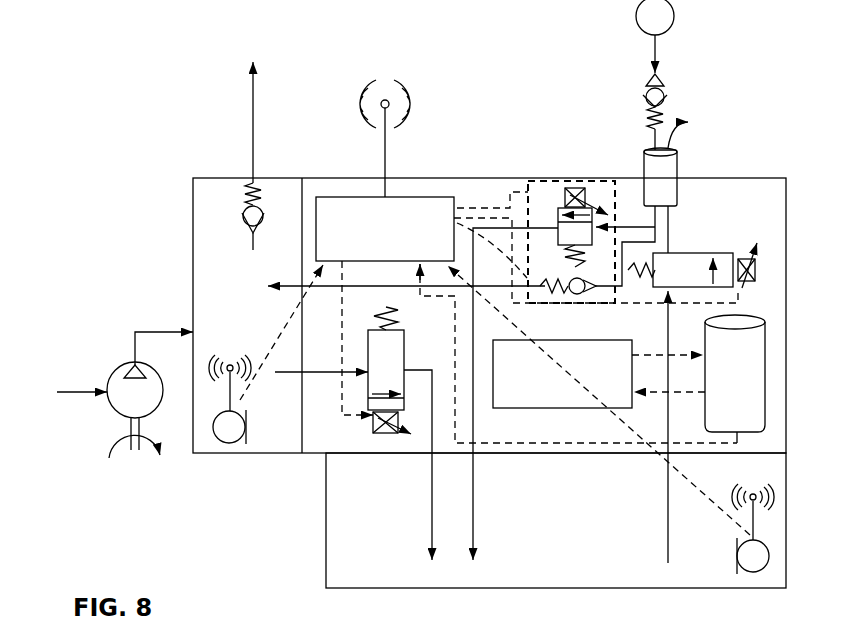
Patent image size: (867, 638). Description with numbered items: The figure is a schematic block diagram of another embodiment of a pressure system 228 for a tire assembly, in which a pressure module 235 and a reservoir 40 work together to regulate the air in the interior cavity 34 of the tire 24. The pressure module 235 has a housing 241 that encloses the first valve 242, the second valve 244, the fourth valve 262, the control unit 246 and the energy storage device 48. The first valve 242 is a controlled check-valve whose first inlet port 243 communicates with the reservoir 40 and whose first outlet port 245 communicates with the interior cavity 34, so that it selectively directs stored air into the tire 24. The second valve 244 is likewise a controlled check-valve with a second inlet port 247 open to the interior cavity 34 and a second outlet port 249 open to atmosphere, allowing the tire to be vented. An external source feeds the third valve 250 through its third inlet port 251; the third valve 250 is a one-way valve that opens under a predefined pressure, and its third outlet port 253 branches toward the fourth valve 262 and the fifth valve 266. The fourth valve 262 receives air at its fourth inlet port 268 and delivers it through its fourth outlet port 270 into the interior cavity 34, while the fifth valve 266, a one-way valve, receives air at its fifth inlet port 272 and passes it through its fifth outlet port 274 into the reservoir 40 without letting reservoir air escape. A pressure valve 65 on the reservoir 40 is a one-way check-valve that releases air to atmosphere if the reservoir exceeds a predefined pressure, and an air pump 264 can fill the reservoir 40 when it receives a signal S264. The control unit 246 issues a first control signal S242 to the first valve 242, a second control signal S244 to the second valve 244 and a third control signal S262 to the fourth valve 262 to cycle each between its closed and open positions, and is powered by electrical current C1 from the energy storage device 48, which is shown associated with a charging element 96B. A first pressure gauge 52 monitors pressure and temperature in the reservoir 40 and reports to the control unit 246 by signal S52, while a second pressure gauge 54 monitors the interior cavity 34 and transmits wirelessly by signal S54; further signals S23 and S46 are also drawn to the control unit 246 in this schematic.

The tire 24 is at (715, 588).
The interior cavity 34 is at (587, 567).
The reservoir 40 is at (207, 240).
The energy storage device 48 is at (735, 379).
The first pressure gauge 52 is at (222, 440).
The second pressure gauge 54 is at (765, 553).
The pressure valve 65 is at (245, 212).
The clutch 96B is at (599, 374).
The pressure system 228 is at (220, 172).
The pressure module 235 is at (430, 178).
The housing 241 is at (730, 178).
The first valve 242 is at (404, 366).
The first inlet port 243 is at (292, 374).
The second valve 244 is at (733, 253).
The first outlet port 245 is at (430, 525).
The control unit 246 is at (385, 170).
The second inlet port 247 is at (670, 318).
The second outlet port 249 is at (671, 243).
The third valve 250 is at (650, 83).
The third inlet port 251 is at (658, 55).
The third outlet port 253 is at (662, 222).
The fourth valve 262 is at (577, 188).
The air pump 264 is at (118, 378).
The fifth valve 266 is at (574, 296).
The fourth inlet port 268 is at (640, 225).
The fourth outlet port 270 is at (475, 485).
The fifth inlet port 272 is at (624, 287).
The fifth outlet port 274 is at (290, 283).
The electrical current C1 is at (497, 440).
The signal S23 is at (425, 102).
The signal S46 is at (350, 98).
The first pressure gauge signal S52 is at (275, 335).
The second pressure gauge wireless signal S54 is at (712, 505).
The first control signal S242 is at (353, 261).
The second control signal S244 is at (457, 208).
The third control signal S262 is at (513, 192).
The air pump signal S264 is at (72, 394).